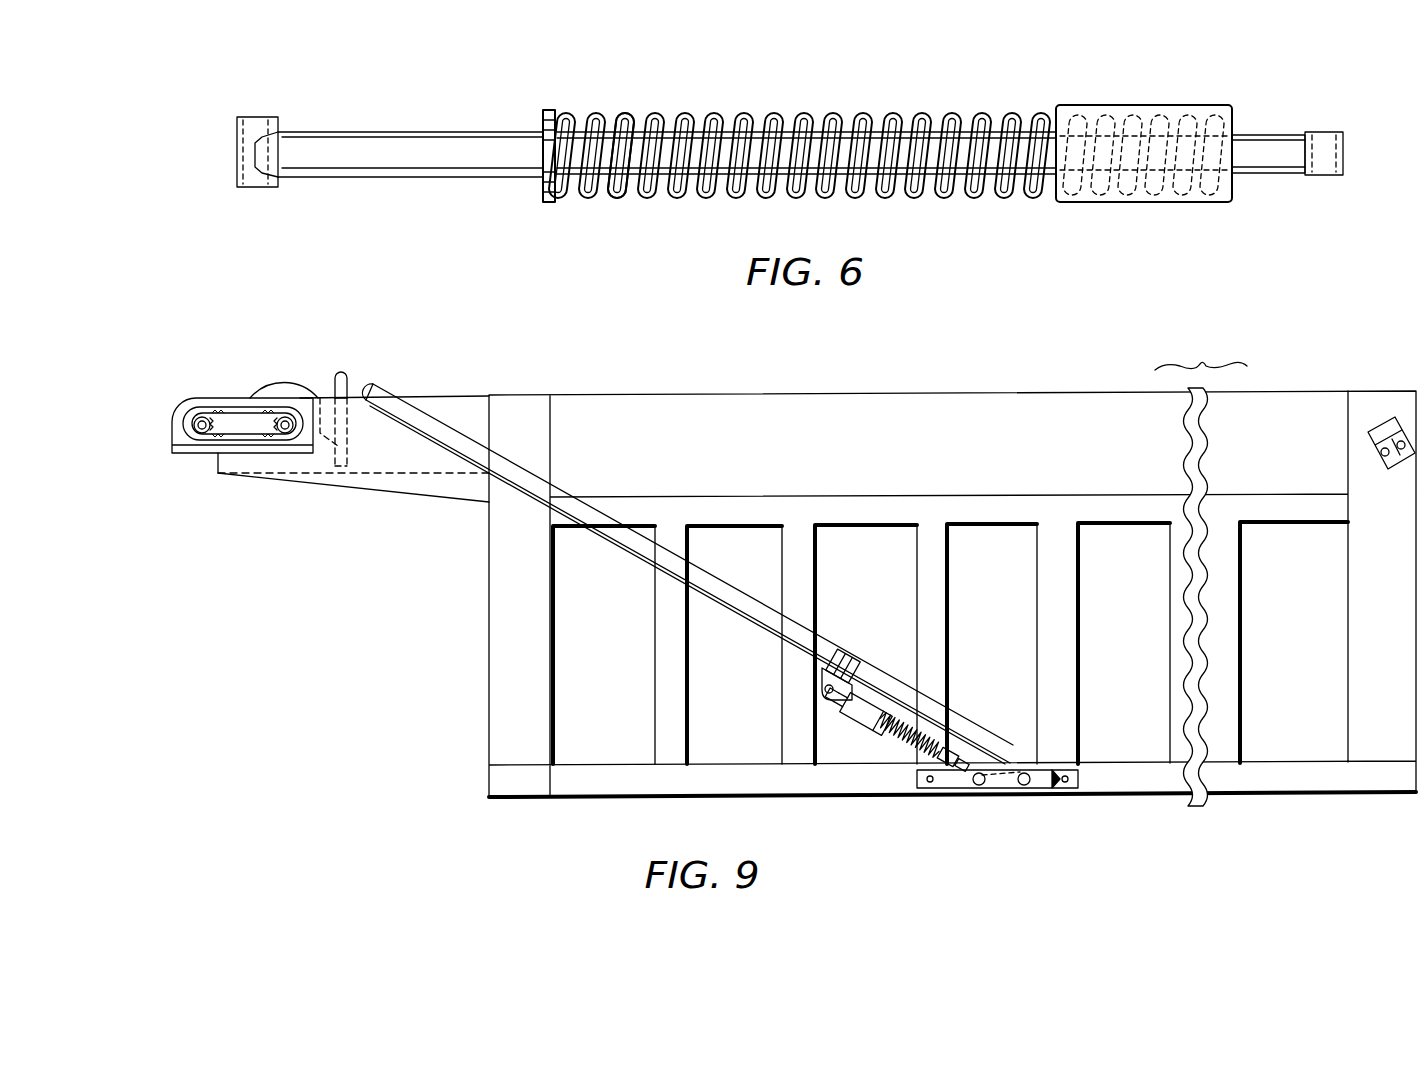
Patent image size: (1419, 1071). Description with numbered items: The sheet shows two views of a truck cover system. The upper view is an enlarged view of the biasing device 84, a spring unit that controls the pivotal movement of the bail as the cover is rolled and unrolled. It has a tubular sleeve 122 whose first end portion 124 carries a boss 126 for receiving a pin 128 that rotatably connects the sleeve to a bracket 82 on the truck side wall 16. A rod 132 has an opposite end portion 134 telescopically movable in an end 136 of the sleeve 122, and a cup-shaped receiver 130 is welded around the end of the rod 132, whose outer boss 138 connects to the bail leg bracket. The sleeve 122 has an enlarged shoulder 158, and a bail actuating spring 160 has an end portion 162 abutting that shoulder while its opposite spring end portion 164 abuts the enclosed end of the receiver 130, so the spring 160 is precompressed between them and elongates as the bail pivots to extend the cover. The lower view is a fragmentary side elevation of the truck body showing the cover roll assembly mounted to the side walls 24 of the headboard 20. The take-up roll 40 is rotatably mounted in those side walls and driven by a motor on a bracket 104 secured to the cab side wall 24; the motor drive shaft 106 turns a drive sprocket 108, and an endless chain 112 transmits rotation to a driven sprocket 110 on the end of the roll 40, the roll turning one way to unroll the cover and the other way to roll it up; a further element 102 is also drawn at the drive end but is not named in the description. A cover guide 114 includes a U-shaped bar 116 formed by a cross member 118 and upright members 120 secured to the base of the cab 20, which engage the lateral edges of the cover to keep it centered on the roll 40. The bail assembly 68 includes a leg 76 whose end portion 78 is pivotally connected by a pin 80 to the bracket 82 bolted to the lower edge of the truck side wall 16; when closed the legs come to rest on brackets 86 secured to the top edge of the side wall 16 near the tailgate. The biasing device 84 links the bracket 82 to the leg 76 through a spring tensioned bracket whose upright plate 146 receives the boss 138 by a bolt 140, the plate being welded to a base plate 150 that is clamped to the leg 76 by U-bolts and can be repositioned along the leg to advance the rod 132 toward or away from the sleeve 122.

In FIG. 9, the truck side wall 16 is at (717, 748).
In FIG. 9, the headboard 20 is at (318, 487).
In FIG. 9, the side wall of the headboard 24 is at (388, 452).
In FIG. 9, the take-up roll 40 is at (277, 385).
In FIG. 9, the bail assembly 68 is at (517, 492).
In FIG. 9, the leg 76 is at (462, 452).
In FIG. 9, the end portion 78 is at (965, 740).
In FIG. 9, the pin 80 is at (1026, 786).
In FIG. 9, the bracket 82 is at (995, 784).
In FIG. 9, the biasing device 84 is at (870, 742).
In FIG. 9, the bracket 86 is at (1385, 458).
In FIG. 9, the pivot pin 102 is at (283, 432).
In FIG. 9, the bracket 104 is at (178, 405).
In FIG. 9, the drive shaft 106 is at (200, 425).
In FIG. 9, the drive sprocket 108 is at (207, 432).
In FIG. 9, the driven sprocket 110 is at (268, 430).
In FIG. 9, the endless chain 112 is at (233, 404).
In FIG. 9, the cover guide 114 is at (350, 378).
In FIG. 9, the U-shaped bar 116 is at (325, 386).
In FIG. 9, the cross member 118 is at (339, 372).
In FIG. 9, the upright member 120 is at (373, 386).
In FIG. 6, the tubular sleeve 122 is at (513, 130).
In FIG. 9, the tubular sleeve 122 is at (953, 768).
In FIG. 6, the first end portion 124 is at (328, 140).
In FIG. 9, the first end portion 124 is at (968, 797).
In FIG. 6, the boss 126 is at (243, 118).
In FIG. 9, the pin 128 is at (982, 772).
In FIG. 6, the cup-shaped receiver 130 is at (1130, 203).
In FIG. 9, the cup-shaped receiver 130 is at (860, 728).
In FIG. 6, the rod 132 is at (1275, 138).
In FIG. 9, the rod 132 is at (838, 712).
In FIG. 6, the opposite end portion 134 is at (630, 192).
In FIG. 6, the end of the sleeve 136 is at (925, 177).
In FIG. 6, the boss 138 is at (1330, 177).
In FIG. 9, the bolt 140 is at (826, 690).
In FIG. 9, the plate 146 is at (820, 683).
In FIG. 9, the base plate 150 is at (845, 655).
In FIG. 6, the enlarged shoulder 158 is at (552, 200).
In FIG. 9, the enlarged shoulder 158 is at (917, 680).
In FIG. 6, the bail actuating spring 160 is at (797, 118).
In FIG. 9, the bail actuating spring 160 is at (903, 760).
In FIG. 6, the spring end portion 162 is at (563, 120).
In FIG. 6, the opposite spring end portion 164 is at (1186, 112).